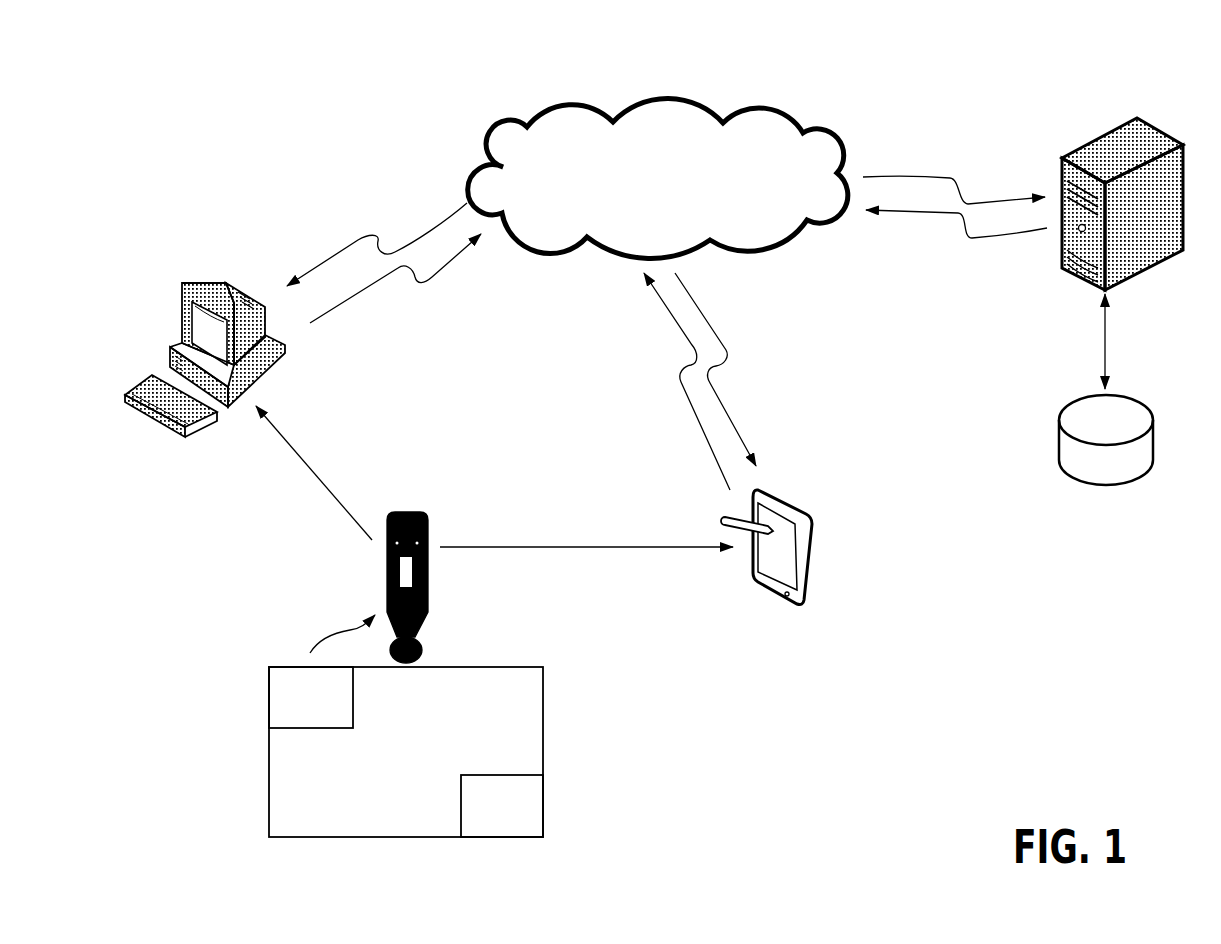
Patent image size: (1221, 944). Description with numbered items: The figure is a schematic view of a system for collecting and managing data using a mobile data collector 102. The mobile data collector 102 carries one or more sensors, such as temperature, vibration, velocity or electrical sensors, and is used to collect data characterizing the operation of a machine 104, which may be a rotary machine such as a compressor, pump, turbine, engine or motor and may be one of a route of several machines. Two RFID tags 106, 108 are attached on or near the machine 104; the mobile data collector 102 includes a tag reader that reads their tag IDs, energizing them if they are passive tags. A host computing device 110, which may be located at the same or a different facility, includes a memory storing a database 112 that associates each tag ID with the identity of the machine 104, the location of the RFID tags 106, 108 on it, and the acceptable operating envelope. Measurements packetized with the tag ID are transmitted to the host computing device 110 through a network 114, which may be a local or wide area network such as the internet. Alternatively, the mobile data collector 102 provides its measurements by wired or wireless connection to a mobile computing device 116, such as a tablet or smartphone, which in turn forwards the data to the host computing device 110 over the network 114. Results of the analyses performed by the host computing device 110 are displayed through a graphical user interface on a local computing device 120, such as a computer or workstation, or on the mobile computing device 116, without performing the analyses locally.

The mobile data collector 102 is at (428, 523).
The machine 104 is at (435, 720).
The RFID tag 106 is at (295, 708).
The RFID tag 108 is at (487, 816).
The host computing device 110 is at (1163, 130).
The database 112 is at (1092, 438).
The network 114 is at (652, 189).
The mobile computing device 116 is at (788, 497).
The local computing device 120 is at (185, 283).